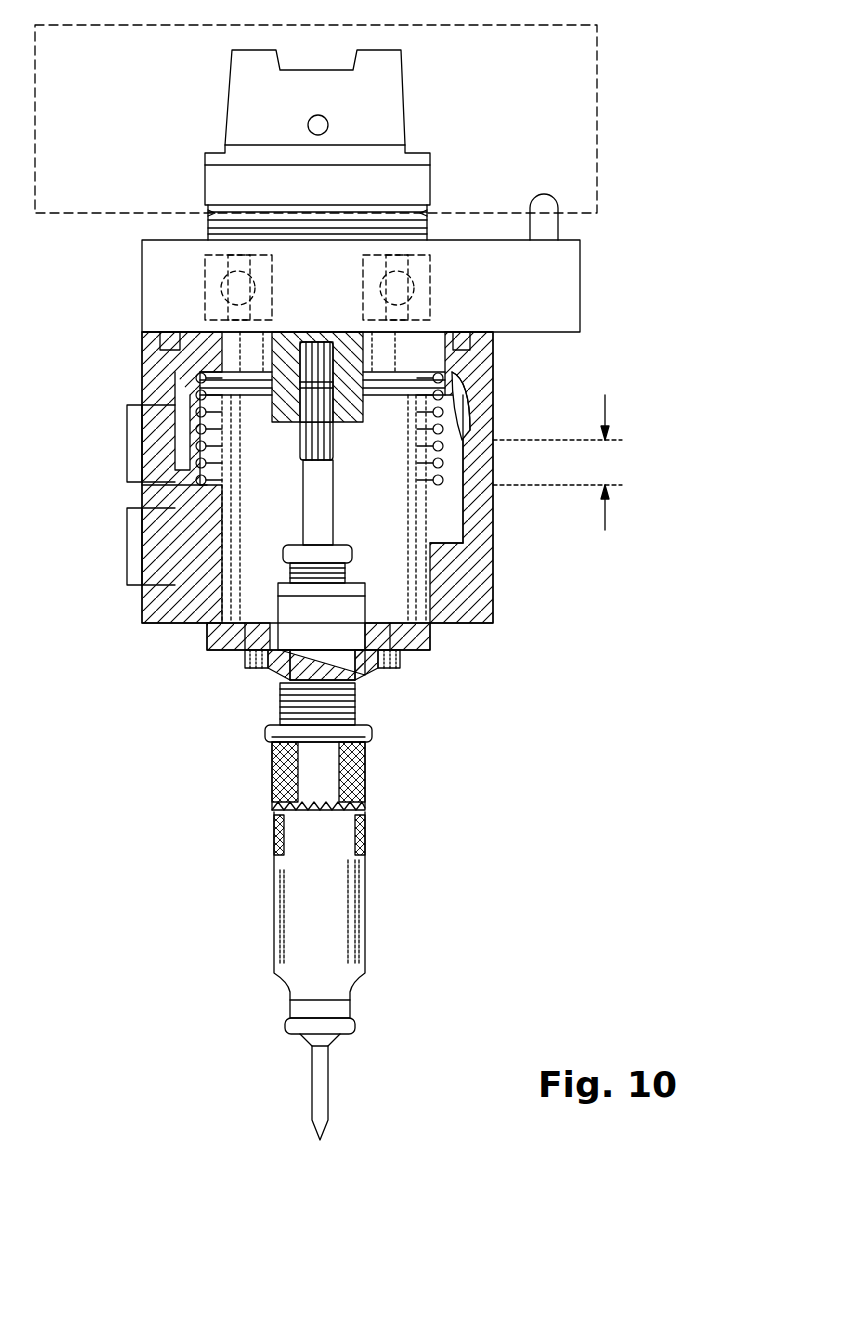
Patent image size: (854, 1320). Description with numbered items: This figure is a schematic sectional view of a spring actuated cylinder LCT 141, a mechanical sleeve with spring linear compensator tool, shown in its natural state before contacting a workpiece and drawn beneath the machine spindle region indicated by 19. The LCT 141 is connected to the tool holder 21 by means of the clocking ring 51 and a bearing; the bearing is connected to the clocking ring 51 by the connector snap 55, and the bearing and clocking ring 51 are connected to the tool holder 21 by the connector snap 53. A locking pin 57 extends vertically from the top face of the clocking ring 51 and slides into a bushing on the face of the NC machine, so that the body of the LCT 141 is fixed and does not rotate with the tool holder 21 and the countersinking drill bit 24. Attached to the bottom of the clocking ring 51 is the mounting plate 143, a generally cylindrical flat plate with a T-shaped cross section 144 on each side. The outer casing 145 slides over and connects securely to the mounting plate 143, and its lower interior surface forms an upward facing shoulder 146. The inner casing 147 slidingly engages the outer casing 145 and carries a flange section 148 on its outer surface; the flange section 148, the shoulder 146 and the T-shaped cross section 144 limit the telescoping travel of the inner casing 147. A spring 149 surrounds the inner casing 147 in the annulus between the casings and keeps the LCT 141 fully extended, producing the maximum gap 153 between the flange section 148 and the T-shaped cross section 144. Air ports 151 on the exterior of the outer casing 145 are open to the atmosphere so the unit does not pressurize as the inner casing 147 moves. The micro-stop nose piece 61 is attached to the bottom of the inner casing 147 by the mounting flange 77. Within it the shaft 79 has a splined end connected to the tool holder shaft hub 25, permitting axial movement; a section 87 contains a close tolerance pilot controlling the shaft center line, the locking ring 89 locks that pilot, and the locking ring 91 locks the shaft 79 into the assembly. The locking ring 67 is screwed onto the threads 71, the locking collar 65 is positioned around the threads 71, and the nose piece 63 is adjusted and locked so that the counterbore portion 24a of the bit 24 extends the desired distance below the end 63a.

The machine tool spindle (phantom) 19 is at (597, 93).
The tool holder 21 is at (404, 108).
The locking pin 57 is at (560, 220).
The clocking ring 51 is at (565, 300).
The connector snap 53 is at (430, 268).
The connector snap 55 is at (205, 275).
The tool holder shaft hub 25 is at (305, 340).
The spring actuated cylinder LCT 141 is at (663, 493).
The mounting plate 143 is at (142, 350).
The T-shaped cross section 144 is at (498, 398).
The outer casing 145 is at (493, 600).
The shoulder 146 is at (455, 568).
The inner casing 147 is at (207, 640).
The flange section 148 is at (440, 546).
The spring 149 is at (195, 463).
The air ports 151 is at (127, 440).
The gap 153 is at (559, 462).
The shaft 79 is at (315, 498).
The locking ring 91 is at (350, 552).
The locking ring 89 is at (330, 630).
The section of nose piece assembly 87 is at (358, 678).
The mounting flange 77 is at (262, 668).
The threads 71 is at (280, 705).
The locking ring 67 is at (265, 734).
The locking collar 65 is at (275, 775).
The nose piece 63 is at (365, 910).
The end of nose piece 63a is at (355, 1025).
The micro-stop nose piece 61 is at (405, 851).
The countersinking drill bit 24 is at (312, 1100).
The counterbore portion 24a is at (330, 1040).